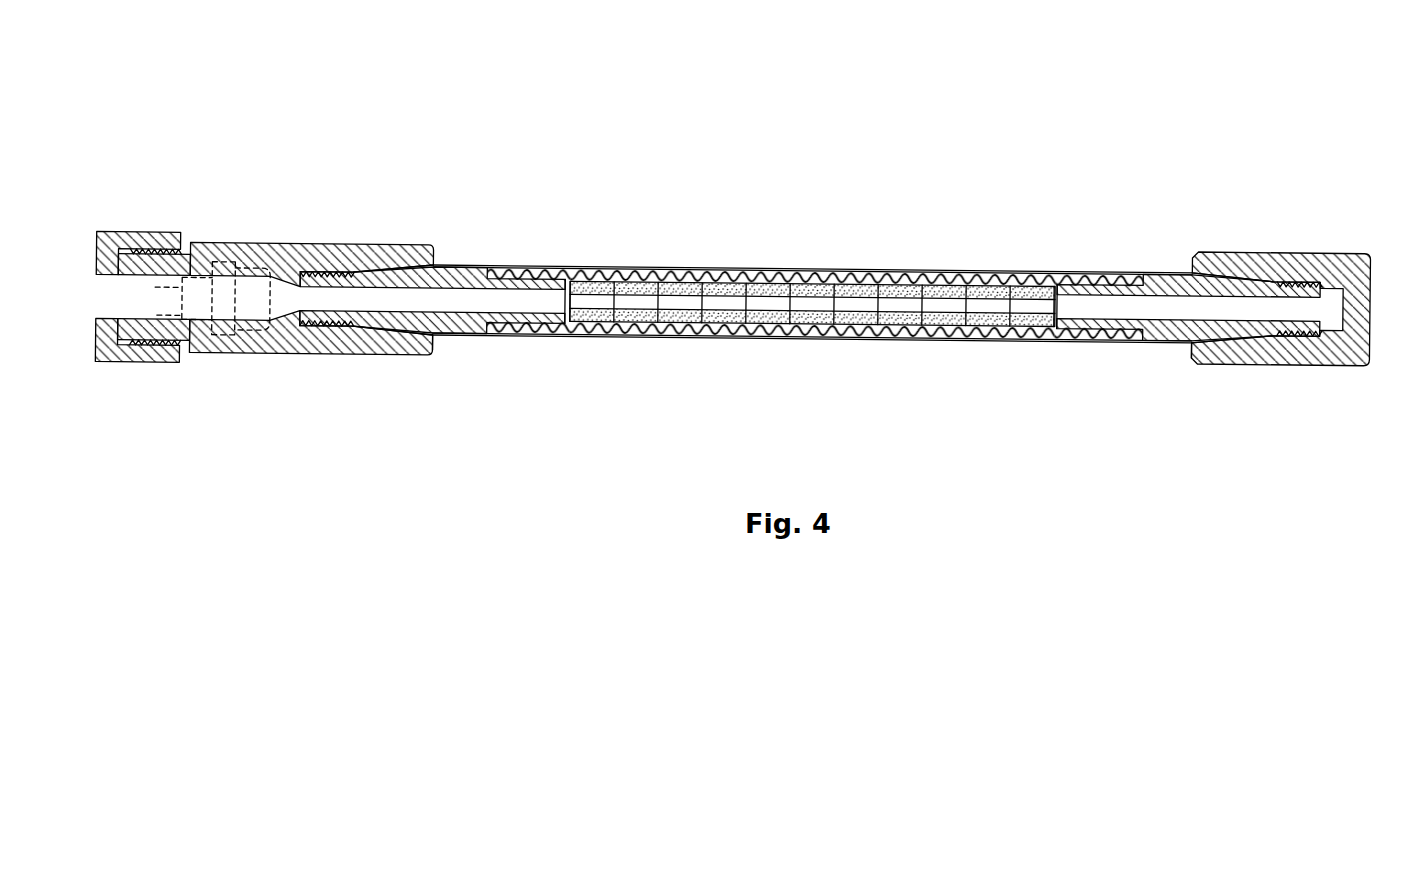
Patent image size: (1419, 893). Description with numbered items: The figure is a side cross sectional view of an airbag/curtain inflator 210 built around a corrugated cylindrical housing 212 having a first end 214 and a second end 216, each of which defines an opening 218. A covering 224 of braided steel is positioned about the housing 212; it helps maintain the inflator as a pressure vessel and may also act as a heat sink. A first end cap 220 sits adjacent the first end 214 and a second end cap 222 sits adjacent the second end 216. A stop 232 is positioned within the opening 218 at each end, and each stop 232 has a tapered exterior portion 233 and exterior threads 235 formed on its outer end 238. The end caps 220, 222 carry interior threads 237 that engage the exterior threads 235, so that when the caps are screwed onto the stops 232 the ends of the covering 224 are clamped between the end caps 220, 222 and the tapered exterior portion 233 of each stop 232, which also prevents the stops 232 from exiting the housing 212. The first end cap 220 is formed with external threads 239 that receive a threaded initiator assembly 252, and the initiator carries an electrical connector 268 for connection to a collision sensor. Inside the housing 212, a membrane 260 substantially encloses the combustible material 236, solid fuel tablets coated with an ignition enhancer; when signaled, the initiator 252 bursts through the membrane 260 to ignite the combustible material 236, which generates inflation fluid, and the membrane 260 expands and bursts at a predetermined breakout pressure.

The inflator 210 is at (723, 258).
The corrugated cylindrical housing 212 is at (512, 270).
The first end 214 is at (492, 270).
The second end 216 is at (1114, 268).
The openings 218 is at (440, 265).
The first end cap 220 is at (320, 354).
The second end cap 222 is at (1249, 253).
The covering 224 is at (735, 270).
The stop 232 is at (453, 330).
The tapered exterior portion 233 is at (405, 356).
The exterior threads 235 is at (322, 272).
The combustible material 236 is at (852, 290).
The interior threads 237 is at (337, 272).
The outer end 238 is at (300, 324).
The external threads 239 is at (168, 233).
The initiator assembly 252 is at (228, 265).
The membrane 260 is at (290, 324).
The electrical connector 268 is at (155, 289).